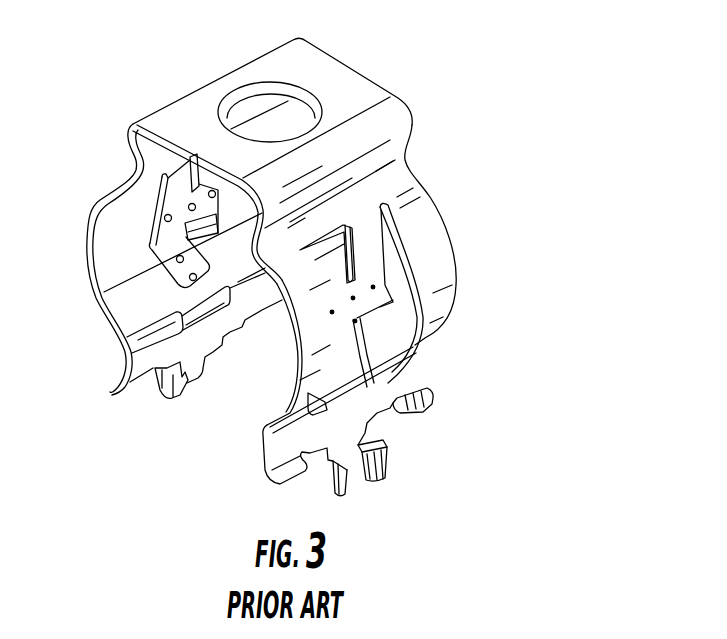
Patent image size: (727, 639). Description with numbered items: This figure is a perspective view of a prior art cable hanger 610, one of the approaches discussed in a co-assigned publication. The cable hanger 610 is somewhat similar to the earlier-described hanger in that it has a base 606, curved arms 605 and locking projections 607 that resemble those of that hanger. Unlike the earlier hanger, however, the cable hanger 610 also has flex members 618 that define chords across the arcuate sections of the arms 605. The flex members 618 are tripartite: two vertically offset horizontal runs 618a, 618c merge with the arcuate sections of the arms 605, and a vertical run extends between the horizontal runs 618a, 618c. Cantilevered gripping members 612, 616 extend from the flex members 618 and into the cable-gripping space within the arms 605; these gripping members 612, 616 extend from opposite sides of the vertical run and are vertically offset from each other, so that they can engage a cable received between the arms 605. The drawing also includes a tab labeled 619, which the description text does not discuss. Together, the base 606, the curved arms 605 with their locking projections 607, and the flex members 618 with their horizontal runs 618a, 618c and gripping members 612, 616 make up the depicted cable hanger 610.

The cable hanger 610 is at (507, 185).
The base 606 is at (358, 91).
The curved arms 605 is at (398, 175).
The gripping member 616 is at (100, 295).
The flex members 618 is at (383, 320).
The horizontal run 618a is at (372, 263).
The horizontal run 618c is at (347, 340).
The gripping member 612 is at (320, 262).
The locking projections 607 is at (360, 487).
The tab 619 is at (424, 412).